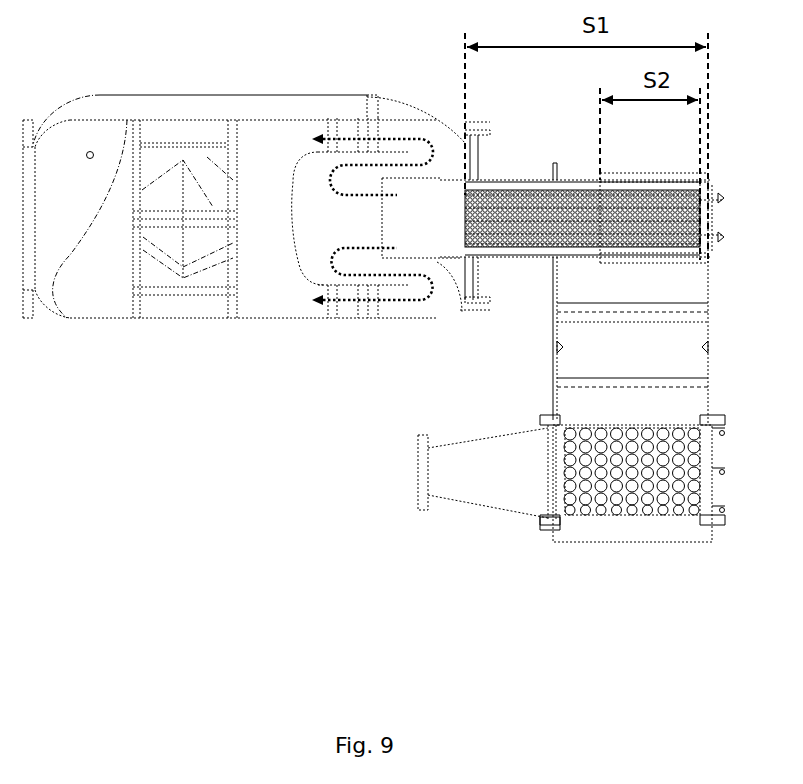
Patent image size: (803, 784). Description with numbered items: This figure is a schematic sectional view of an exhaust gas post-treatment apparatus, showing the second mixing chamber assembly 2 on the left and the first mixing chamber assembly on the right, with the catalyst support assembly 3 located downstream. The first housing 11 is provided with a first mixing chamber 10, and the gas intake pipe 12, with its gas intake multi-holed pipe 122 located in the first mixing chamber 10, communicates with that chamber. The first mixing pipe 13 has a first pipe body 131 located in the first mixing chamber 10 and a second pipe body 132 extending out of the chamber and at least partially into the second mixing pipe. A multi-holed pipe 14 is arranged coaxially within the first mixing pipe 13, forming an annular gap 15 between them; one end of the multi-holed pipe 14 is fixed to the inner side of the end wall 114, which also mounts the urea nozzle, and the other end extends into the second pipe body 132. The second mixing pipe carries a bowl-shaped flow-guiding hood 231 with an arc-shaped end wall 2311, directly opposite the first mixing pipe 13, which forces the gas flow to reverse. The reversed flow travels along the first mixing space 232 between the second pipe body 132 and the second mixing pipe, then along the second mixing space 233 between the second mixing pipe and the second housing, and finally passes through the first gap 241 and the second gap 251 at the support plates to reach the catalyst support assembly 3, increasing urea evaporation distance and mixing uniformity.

The second mixing chamber assembly 2 is at (282, 107).
The catalyst support assembly 3 is at (208, 168).
The first mixing chamber 10 is at (693, 308).
The first housing 11 is at (712, 373).
The gas intake pipe 12 is at (422, 470).
The first mixing pipe 13 is at (528, 180).
The multi-holed pipe 14 is at (502, 240).
The annular gap 15 is at (568, 187).
The end wall 114 is at (712, 218).
The gas intake multi-holed pipe 122 is at (635, 500).
The first pipe body 131 is at (660, 183).
The second pipe body 132 is at (435, 243).
The flow-guiding hood 231 is at (292, 228).
The first mixing space 232 is at (412, 172).
The second mixing space 233 is at (385, 128).
The arc-shaped end wall 2311 is at (292, 207).
The first gap 241 is at (363, 310).
The second gap 251 is at (332, 310).